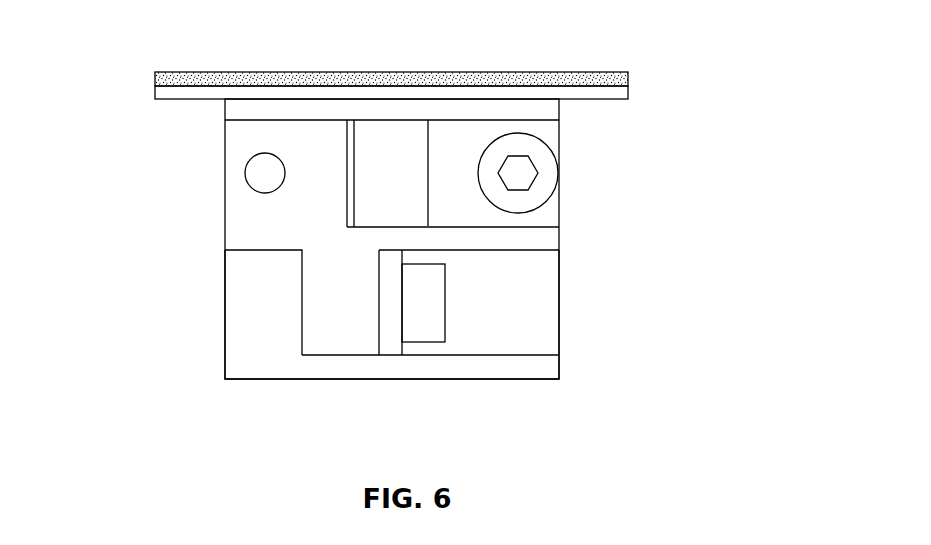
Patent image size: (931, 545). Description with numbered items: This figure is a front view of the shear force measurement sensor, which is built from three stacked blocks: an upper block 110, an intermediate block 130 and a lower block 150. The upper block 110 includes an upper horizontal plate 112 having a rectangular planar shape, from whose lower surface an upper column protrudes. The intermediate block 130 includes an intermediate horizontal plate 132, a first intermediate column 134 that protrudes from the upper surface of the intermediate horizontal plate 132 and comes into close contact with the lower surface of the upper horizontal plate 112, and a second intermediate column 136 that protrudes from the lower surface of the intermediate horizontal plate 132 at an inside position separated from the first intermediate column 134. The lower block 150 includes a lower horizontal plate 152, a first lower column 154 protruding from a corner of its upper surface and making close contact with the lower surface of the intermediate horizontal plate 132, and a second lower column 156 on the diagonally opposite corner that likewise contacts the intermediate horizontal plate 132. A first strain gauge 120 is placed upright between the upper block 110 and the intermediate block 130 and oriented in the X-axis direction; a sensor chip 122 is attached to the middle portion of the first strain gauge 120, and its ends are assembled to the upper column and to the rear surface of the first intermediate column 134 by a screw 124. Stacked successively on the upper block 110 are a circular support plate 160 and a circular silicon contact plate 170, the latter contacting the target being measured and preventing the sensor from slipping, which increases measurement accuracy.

The upper block 110 is at (563, 110).
The upper horizontal plate 112 is at (240, 107).
The first strain gauge 120 is at (563, 147).
The sensor chip 122 is at (385, 133).
The screw 124 is at (548, 173).
The intermediate block 130 is at (223, 228).
The intermediate horizontal plate 132 is at (546, 243).
The first intermediate column 134 is at (247, 210).
The second intermediate column 136 is at (337, 332).
The lower block 150 is at (223, 334).
The lower horizontal plate 152 is at (482, 367).
The first lower column 154 is at (534, 321).
The second lower column 156 is at (238, 279).
The circular support plate 160 is at (622, 93).
The circular silicon contact plate 170 is at (620, 73).